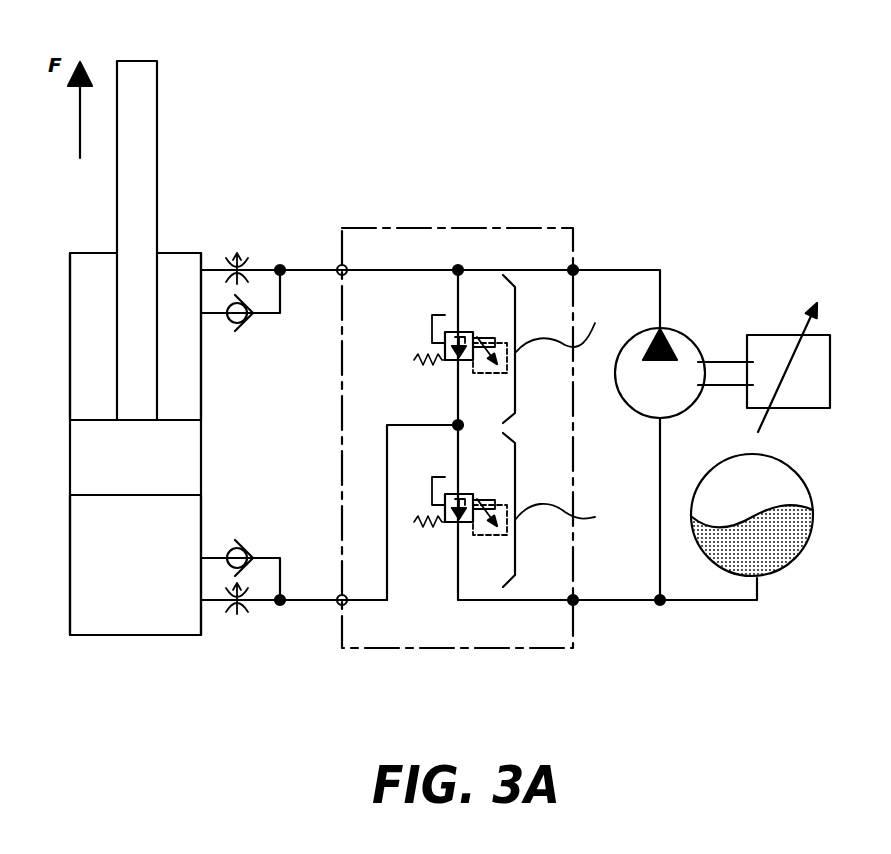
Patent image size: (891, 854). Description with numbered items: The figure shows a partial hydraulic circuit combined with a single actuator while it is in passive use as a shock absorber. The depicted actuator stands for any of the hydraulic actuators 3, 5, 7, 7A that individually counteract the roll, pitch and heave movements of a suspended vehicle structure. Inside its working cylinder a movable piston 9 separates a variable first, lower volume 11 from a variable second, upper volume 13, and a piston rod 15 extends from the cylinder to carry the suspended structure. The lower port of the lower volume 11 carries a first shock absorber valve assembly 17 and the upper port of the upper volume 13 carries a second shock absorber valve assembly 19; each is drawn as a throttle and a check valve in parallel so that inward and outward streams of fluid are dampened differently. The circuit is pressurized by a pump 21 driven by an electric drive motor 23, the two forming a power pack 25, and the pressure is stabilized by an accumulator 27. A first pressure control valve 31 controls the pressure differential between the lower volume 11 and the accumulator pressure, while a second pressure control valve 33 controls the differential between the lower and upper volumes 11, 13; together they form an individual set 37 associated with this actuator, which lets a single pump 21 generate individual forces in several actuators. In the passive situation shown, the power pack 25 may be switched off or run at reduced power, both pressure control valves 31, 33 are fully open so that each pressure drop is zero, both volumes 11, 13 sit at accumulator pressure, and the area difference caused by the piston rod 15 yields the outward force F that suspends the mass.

The hydraulic actuator 3 is at (115, 395).
The hydraulic actuator 5 is at (115, 395).
The hydraulic actuator 7 is at (115, 395).
The hydraulic actuator 7A is at (115, 395).
The piston 9 is at (88, 462).
The first (lower) volume 11 is at (97, 563).
The second (upper) volume 13 is at (105, 338).
The piston rod 15 is at (133, 145).
The first shock absorber valve assembly 17 is at (265, 594).
The second shock absorber valve assembly 19 is at (268, 288).
The pump 21 is at (682, 348).
The electric drive motor 23 is at (810, 398).
The power pack 25 is at (832, 318).
The accumulator 27 is at (767, 492).
The first pressure control valve 31 is at (447, 532).
The second pressure control valve 33 is at (413, 320).
The set of first and second pressure control valves 37 is at (488, 410).